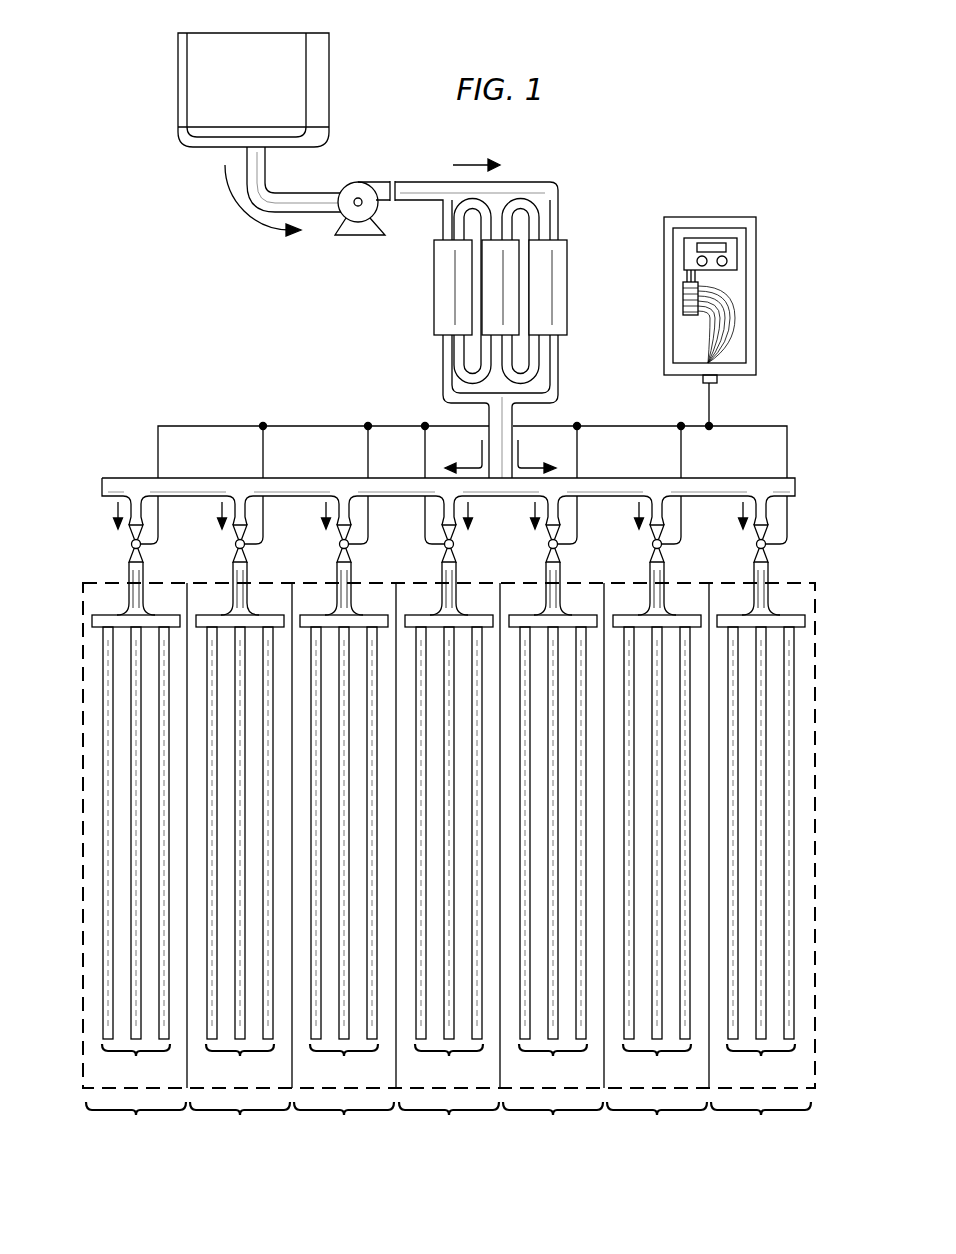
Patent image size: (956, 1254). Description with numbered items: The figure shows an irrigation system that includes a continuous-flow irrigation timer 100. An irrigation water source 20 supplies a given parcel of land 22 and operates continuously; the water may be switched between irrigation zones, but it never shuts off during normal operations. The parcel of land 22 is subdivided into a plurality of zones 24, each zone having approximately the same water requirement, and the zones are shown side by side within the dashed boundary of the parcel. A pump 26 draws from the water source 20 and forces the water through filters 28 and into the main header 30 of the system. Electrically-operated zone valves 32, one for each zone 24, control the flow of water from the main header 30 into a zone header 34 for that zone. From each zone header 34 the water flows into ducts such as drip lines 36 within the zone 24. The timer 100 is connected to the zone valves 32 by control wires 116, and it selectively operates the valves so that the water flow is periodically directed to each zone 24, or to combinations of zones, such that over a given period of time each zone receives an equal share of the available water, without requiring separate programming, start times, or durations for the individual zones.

The irrigation water source 20 is at (177, 80).
The pump 26 is at (366, 182).
The filters 28 is at (433, 287).
The continuous-flow irrigation timer 100 is at (716, 217).
The control wires 116 is at (297, 426).
The main header 30 is at (134, 477).
The electrically-operated zone valves 32 is at (131, 546).
The zone header 34 is at (215, 614).
The drip lines 36 is at (448, 856).
The zones 24 is at (448, 863).
The parcel of land 22 is at (488, 578).